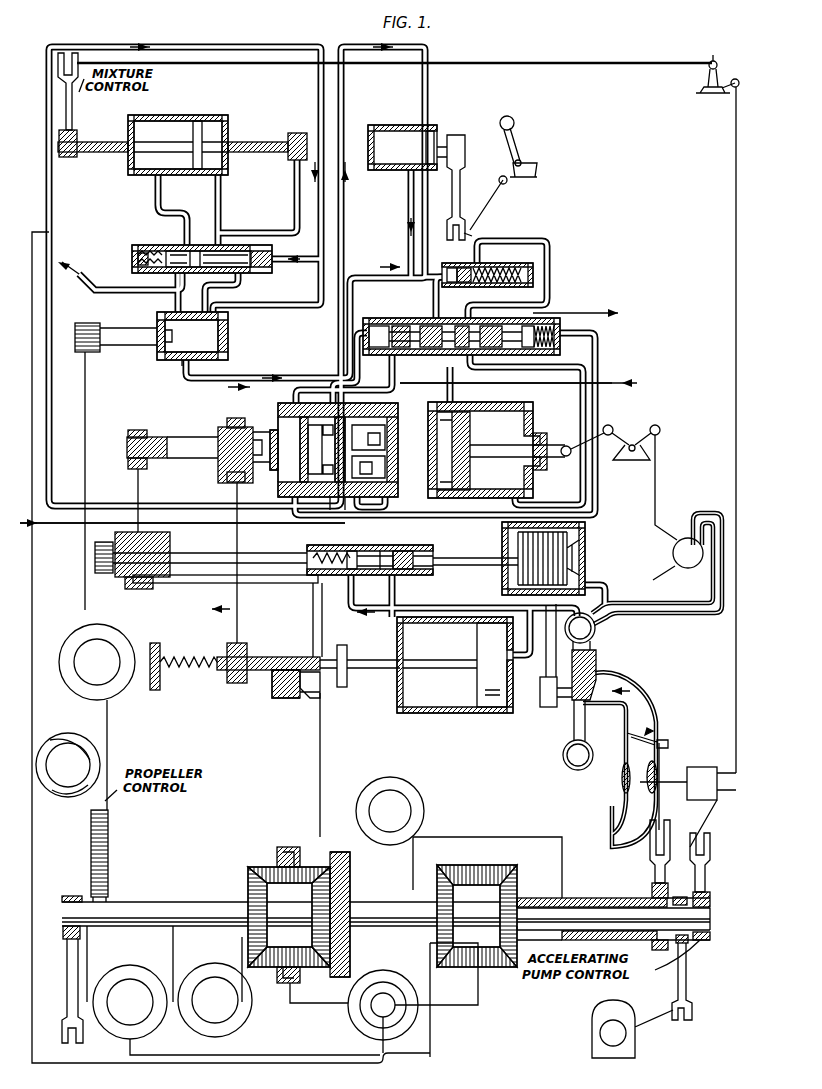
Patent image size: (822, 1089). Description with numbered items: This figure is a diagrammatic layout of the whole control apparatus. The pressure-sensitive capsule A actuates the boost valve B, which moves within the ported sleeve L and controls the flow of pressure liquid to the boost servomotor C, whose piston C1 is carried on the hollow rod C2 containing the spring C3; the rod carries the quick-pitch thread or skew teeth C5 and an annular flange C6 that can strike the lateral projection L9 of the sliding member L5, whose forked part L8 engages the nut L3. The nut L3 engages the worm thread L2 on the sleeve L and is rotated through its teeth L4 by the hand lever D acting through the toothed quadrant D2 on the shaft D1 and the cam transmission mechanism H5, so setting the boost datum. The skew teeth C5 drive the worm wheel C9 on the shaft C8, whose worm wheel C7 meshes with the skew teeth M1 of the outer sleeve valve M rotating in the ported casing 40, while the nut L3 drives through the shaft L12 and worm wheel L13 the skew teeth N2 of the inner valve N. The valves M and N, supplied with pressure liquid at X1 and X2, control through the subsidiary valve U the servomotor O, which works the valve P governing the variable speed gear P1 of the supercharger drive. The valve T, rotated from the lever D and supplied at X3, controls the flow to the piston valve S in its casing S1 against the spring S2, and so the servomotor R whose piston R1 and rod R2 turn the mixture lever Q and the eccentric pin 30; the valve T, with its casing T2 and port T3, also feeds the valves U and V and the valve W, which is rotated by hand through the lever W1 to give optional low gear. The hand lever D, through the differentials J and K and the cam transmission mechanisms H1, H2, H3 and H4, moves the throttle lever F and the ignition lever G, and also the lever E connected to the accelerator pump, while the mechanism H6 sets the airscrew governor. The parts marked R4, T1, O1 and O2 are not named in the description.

The mixture lever Q is at (72, 102).
The servomotor R is at (173, 115).
The piston R1 is at (200, 128).
The piston rod R2 is at (262, 142).
The piston rod extension R4 is at (118, 150).
The hollow pin 30 is at (297, 133).
The piston valve S is at (228, 256).
The casing of valve S S1 is at (152, 246).
The spring S2 is at (137, 265).
The pressure liquid inlet X3 is at (66, 259).
The valve W is at (394, 125).
The hand lever W1 is at (447, 198).
The valve V is at (462, 275).
The valve U is at (505, 336).
The pressure liquid inlet X1 is at (511, 373).
The valve T is at (229, 337).
The servo piston rod head T1 is at (80, 351).
The casing of valve T T2 is at (172, 362).
The port T3 is at (187, 366).
The outer ported sleeve valve M is at (282, 410).
The skew gear teeth M1 is at (218, 440).
The inner ported sleeve valve N is at (282, 488).
The skew teeth N2 is at (130, 430).
The ported casing 40 is at (393, 496).
The worm wheel C7 is at (232, 418).
The worm wheel L13 is at (128, 452).
The shaft L12 is at (137, 479).
The nut L3 is at (148, 525).
The worm thread L2 is at (183, 551).
The teeth L4 is at (95, 565).
The forked part L8 is at (158, 590).
The sliding member L5 is at (212, 585).
The lateral projection L9 is at (318, 619).
The ported sleeve L is at (308, 552).
The boost valve B is at (410, 572).
The pressure liquid inlet X2 is at (182, 535).
The shaft C8 is at (236, 626).
The spring C3 is at (181, 666).
The worm wheel C9 is at (238, 686).
The quick-pitch thread C5 is at (263, 672).
The annular flange C6 is at (343, 687).
The hollow piston rod C2 is at (360, 668).
The boost servomotor C is at (420, 713).
The piston C1 is at (486, 704).
The servomotor O is at (534, 411).
The throttle piston O1 is at (462, 470).
The throttle piston rod O2 is at (552, 458).
The valve P is at (631, 440).
The variable speed gear P1 is at (686, 553).
The pressure-sensitive capsule A is at (550, 552).
The cam transmission mechanism H5 is at (117, 688).
The cam transmission mechanism H6 is at (72, 797).
The toothed quadrant D2 is at (108, 824).
The shaft D1 is at (155, 910).
The hand control lever D is at (68, 985).
The cam transmission mechanism H1 is at (140, 995).
The cam transmission mechanism H2 is at (218, 992).
The cam transmission mechanism H3 is at (390, 982).
The cam transmission mechanism H4 is at (422, 812).
The differential mechanism J is at (299, 913).
The differential mechanism K is at (487, 947).
The throttle lever F is at (655, 868).
The accelerator pump lever E is at (707, 873).
The ignition lever G is at (688, 970).